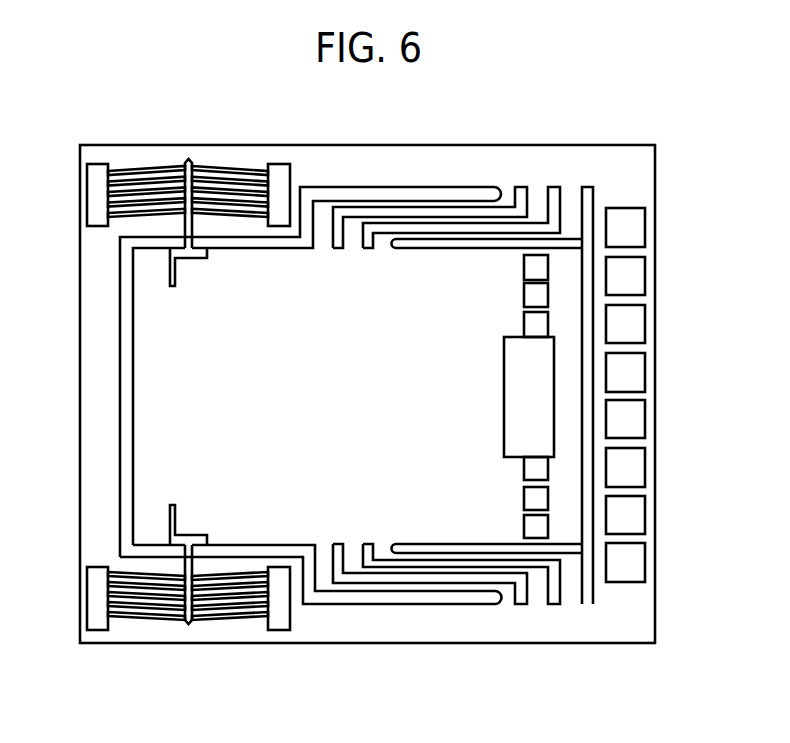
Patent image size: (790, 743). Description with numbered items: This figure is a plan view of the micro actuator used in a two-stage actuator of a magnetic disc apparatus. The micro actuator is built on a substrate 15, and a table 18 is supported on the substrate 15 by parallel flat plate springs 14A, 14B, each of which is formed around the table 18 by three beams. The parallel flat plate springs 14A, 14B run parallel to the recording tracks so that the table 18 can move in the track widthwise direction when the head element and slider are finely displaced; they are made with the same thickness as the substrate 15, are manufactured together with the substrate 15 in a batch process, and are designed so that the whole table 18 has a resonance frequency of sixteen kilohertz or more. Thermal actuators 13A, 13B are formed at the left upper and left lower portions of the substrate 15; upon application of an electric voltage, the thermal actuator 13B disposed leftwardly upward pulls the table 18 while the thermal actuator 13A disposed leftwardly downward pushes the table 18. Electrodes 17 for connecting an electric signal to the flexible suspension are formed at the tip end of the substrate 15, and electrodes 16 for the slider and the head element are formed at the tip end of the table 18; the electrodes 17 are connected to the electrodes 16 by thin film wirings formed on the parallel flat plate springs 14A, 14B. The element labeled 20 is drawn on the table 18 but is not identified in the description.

The thermal actuator 13A is at (98, 599).
The thermal actuator 13B is at (215, 190).
The parallel flat plate spring 14A is at (472, 580).
The parallel flat plate spring 14B is at (403, 229).
The substrate 15 is at (593, 176).
The electrodes 16 is at (537, 271).
The electrodes 17 is at (628, 508).
The table 18 is at (165, 373).
The electrode pad 20 is at (537, 412).